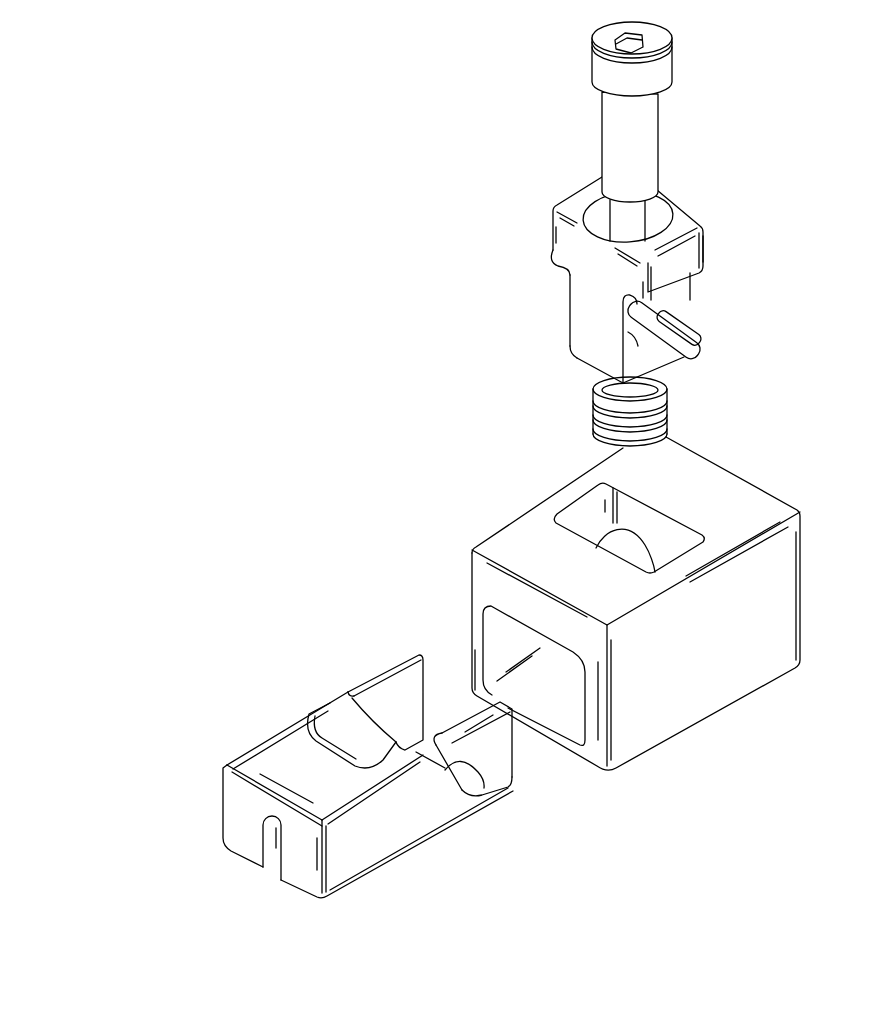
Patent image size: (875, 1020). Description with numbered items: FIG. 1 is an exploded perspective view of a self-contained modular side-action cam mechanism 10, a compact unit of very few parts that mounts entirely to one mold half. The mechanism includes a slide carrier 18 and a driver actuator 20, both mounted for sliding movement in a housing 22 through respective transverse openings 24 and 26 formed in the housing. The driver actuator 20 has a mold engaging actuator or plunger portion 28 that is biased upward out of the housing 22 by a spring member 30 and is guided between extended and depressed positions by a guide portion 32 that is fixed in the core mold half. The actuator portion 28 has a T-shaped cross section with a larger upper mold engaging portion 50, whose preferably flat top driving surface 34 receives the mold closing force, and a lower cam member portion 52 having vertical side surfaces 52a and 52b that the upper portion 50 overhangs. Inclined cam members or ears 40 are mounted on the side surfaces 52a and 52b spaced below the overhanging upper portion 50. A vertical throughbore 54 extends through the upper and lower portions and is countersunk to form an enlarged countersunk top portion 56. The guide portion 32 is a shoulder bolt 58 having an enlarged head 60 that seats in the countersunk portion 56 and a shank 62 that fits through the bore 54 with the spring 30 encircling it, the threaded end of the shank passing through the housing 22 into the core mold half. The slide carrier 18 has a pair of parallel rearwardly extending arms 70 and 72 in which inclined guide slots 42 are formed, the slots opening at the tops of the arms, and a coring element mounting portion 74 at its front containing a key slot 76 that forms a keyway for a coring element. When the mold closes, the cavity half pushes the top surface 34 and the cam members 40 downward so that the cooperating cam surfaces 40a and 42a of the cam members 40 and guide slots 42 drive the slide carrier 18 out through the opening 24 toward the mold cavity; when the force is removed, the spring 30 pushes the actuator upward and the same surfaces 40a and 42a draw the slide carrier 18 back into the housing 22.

The modular side-action cam mechanism 10 is at (167, 327).
The slide carrier 18 is at (343, 675).
The driver actuator 20 is at (763, 265).
The housing 22 is at (500, 515).
The transverse opening 24 is at (575, 735).
The transverse opening 26 is at (677, 543).
The mold engaging actuator portion 28 is at (538, 277).
The spring member 30 is at (670, 410).
The guide portion 32 is at (585, 145).
The top driving surface 34 is at (693, 228).
The inclined cam members 40 is at (700, 323).
The cam surface 40a is at (688, 362).
The inclined guide slots 42 is at (343, 697).
The cam surface 42a is at (513, 783).
The upper mold engaging portion 50 is at (705, 252).
The lower cam member portion 52 is at (587, 327).
The vertical side surface 52a is at (637, 343).
The vertical side surface 52b is at (567, 308).
The vertical throughbore 54 is at (600, 215).
The enlarged countersunk top portion 56 is at (657, 202).
The shoulder bolt 58 is at (677, 77).
The enlarged head 60 is at (598, 74).
The shank 62 is at (657, 138).
The rearwardly extending arm 70 is at (450, 823).
The rearwardly extending arm 72 is at (397, 685).
The coring element mounting portion 74 is at (247, 747).
The key slot 76 is at (265, 867).